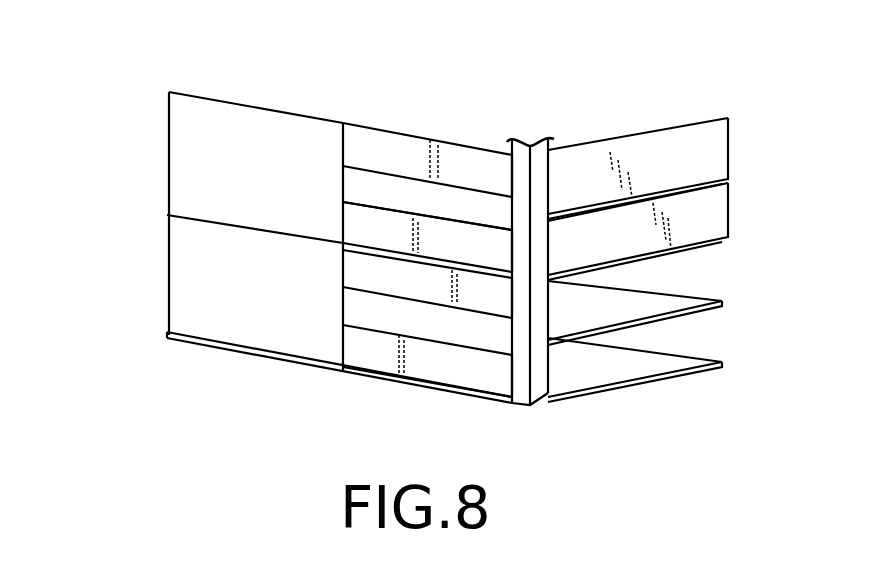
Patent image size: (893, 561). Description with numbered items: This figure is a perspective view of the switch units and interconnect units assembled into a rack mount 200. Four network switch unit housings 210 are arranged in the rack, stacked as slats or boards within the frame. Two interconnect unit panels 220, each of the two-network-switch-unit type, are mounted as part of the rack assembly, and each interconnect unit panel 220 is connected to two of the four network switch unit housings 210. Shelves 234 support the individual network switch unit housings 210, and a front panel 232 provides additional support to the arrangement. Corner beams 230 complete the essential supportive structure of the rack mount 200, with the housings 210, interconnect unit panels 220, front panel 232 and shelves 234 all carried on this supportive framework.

The rack mount 200 is at (750, 86).
The network switch unit housing 210 is at (375, 147).
The interconnect unit panel 220 is at (190, 175).
The corner beam 230 is at (537, 391).
The front panel 232 is at (453, 210).
The shelf 234 is at (708, 178).